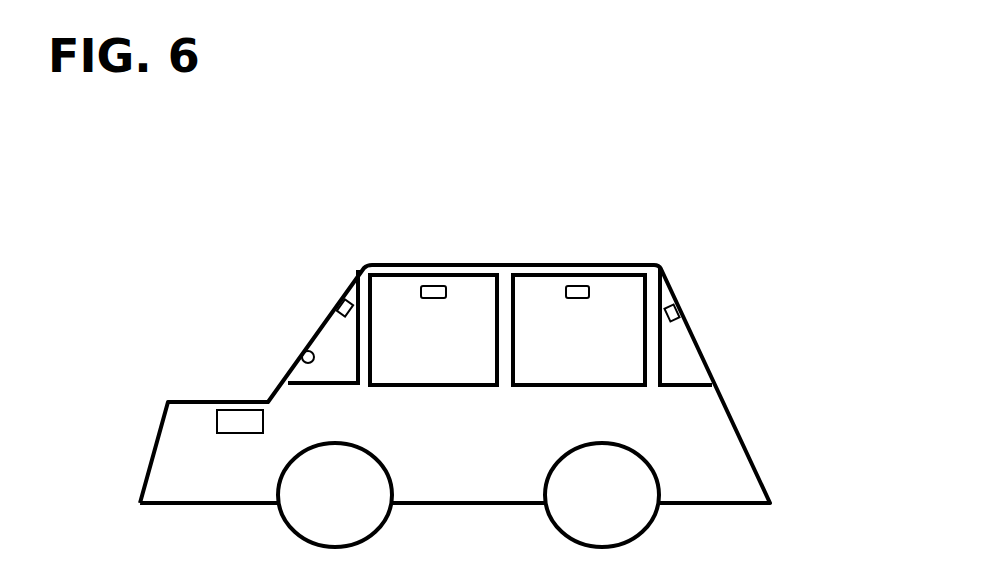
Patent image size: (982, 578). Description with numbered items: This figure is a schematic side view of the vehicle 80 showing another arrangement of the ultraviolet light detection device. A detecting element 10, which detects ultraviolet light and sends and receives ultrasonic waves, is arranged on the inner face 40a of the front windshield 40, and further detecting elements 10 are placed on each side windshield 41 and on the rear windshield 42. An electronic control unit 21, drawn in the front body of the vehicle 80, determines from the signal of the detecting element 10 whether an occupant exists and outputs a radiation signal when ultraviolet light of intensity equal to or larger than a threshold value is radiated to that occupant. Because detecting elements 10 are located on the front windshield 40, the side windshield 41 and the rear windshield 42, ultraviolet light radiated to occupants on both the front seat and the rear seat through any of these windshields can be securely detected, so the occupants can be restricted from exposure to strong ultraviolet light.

The detecting element 10 is at (340, 303).
The electronic control unit 21 is at (235, 425).
The front windshield 40 is at (322, 330).
The inner face 40a is at (300, 353).
The side windshield 41 is at (400, 292).
The rear windshield 42 is at (690, 346).
The vehicle 80 is at (735, 425).